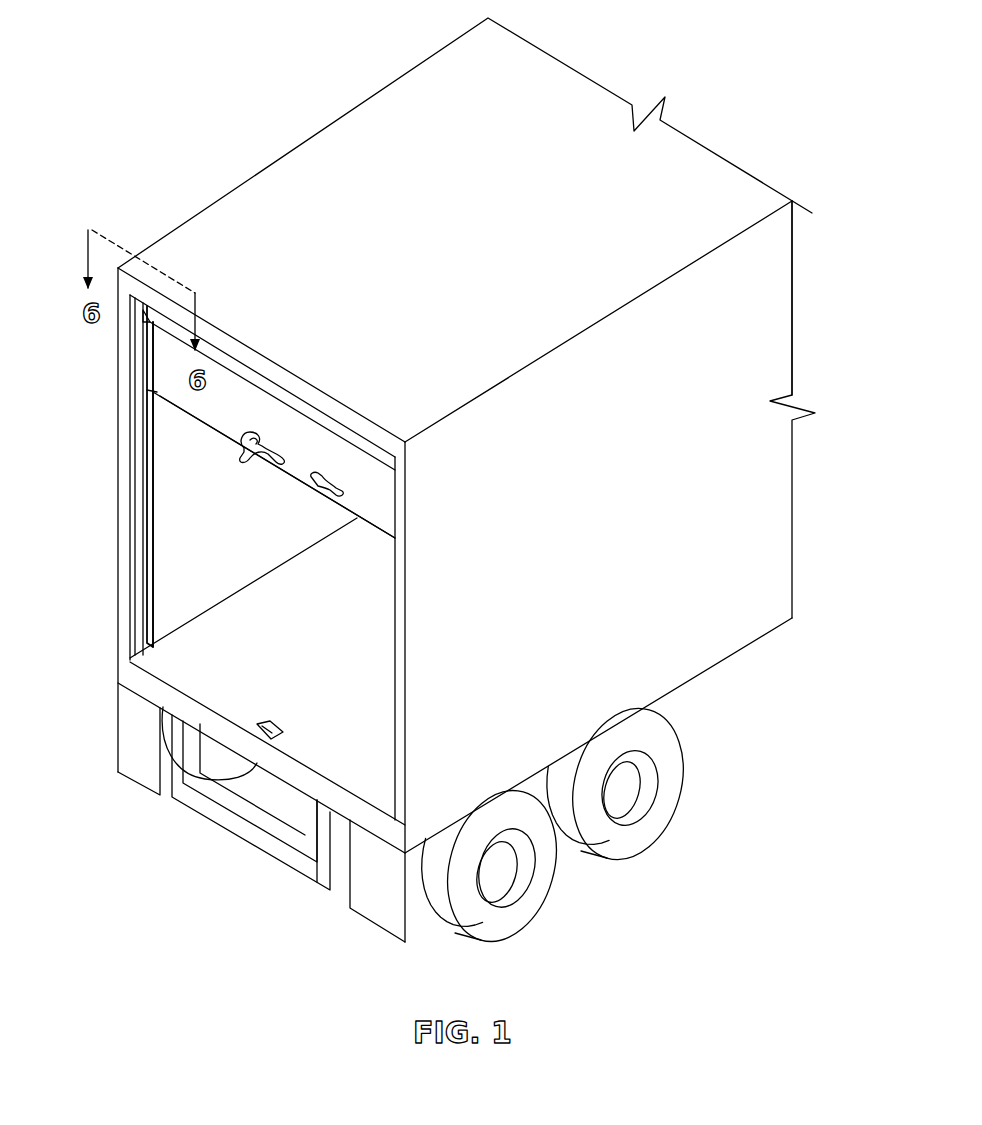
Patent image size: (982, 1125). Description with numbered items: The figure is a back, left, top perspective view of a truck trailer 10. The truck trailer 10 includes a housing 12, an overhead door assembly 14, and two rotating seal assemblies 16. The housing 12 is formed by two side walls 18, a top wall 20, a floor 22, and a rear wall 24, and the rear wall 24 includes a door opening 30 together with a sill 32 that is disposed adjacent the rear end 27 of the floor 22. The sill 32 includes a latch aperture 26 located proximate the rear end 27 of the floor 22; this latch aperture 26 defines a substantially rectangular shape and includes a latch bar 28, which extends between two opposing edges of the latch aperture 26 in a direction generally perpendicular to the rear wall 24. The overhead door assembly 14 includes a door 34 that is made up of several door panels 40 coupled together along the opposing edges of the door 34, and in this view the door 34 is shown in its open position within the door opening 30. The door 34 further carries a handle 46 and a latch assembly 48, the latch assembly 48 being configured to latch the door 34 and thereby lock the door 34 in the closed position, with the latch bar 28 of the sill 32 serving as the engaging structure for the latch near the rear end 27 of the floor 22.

The truck trailer 10 is at (114, 36).
The housing 12 is at (832, 294).
The overhead door assembly 14 is at (190, 502).
The rotating seal assemblies 16 is at (142, 593).
The side walls 18 is at (328, 137).
The top wall 20 is at (530, 148).
The floor 22 is at (238, 682).
The rear wall 24 is at (125, 477).
The latch aperture 26 is at (200, 733).
The rear end 27 is at (340, 770).
The latch bar 28 is at (187, 690).
The door opening 30 is at (227, 544).
The sill 32 is at (318, 783).
The door 34 is at (170, 357).
The door panels 40 is at (170, 375).
The handle 46 is at (313, 493).
The latch assembly 48 is at (232, 450).